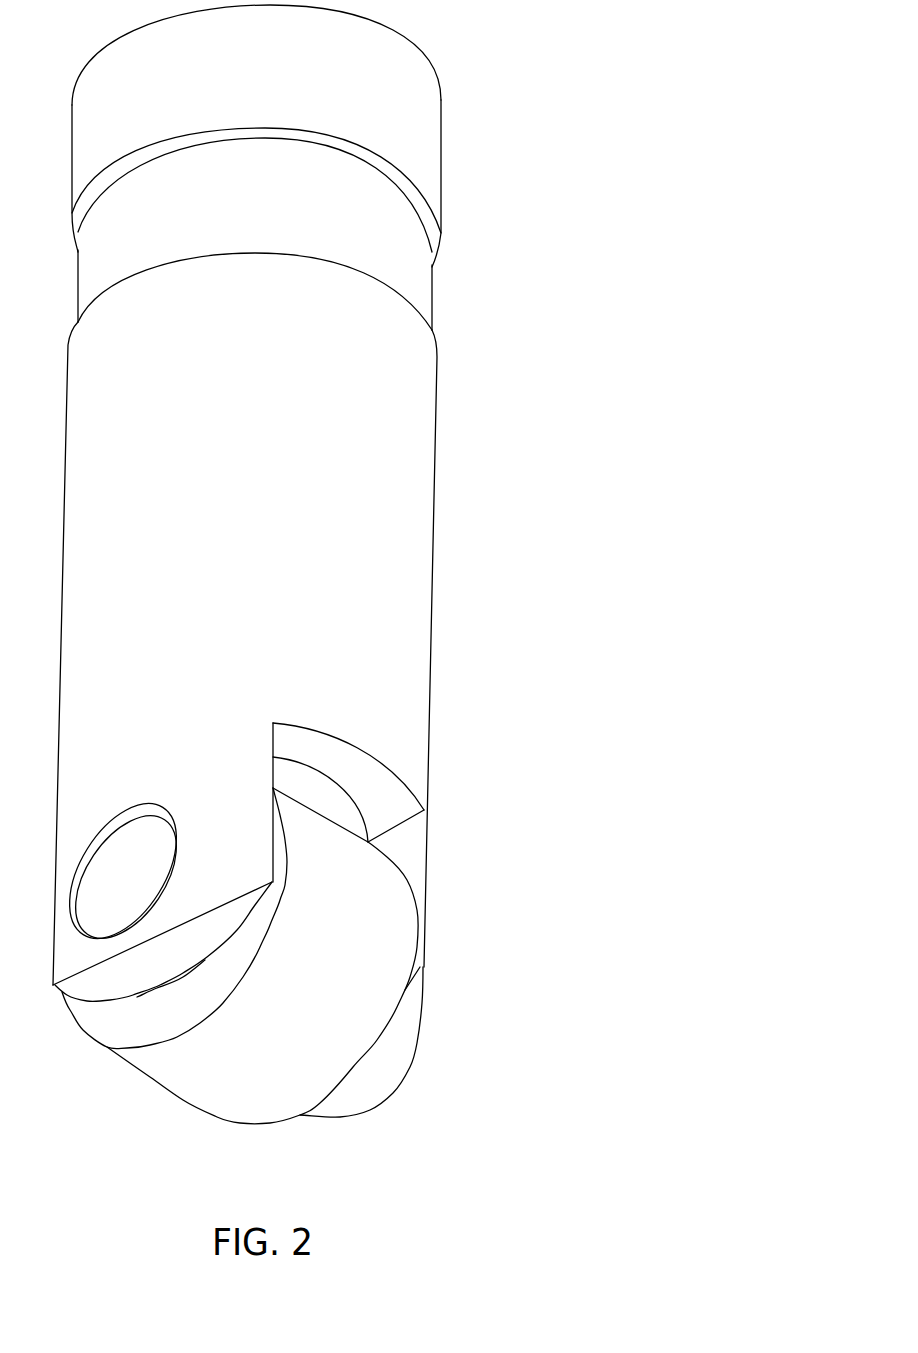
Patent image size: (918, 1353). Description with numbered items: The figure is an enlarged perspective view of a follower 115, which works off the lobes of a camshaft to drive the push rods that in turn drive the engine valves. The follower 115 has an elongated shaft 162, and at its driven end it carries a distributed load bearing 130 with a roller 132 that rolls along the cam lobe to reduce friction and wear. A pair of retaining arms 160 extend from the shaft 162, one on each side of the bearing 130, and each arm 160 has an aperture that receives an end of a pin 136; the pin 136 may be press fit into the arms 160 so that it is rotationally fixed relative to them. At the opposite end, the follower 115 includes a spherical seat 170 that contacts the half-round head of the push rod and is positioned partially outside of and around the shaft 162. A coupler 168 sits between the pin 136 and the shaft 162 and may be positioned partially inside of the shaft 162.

The follower 115 is at (519, 450).
The distributed load bearing 130 is at (312, 958).
The roller 132 is at (270, 1123).
The pin 136 is at (150, 887).
The retaining arms 160 is at (235, 903).
The shaft 162 is at (408, 551).
The coupler 168 is at (431, 283).
The spherical seat 170 is at (442, 150).